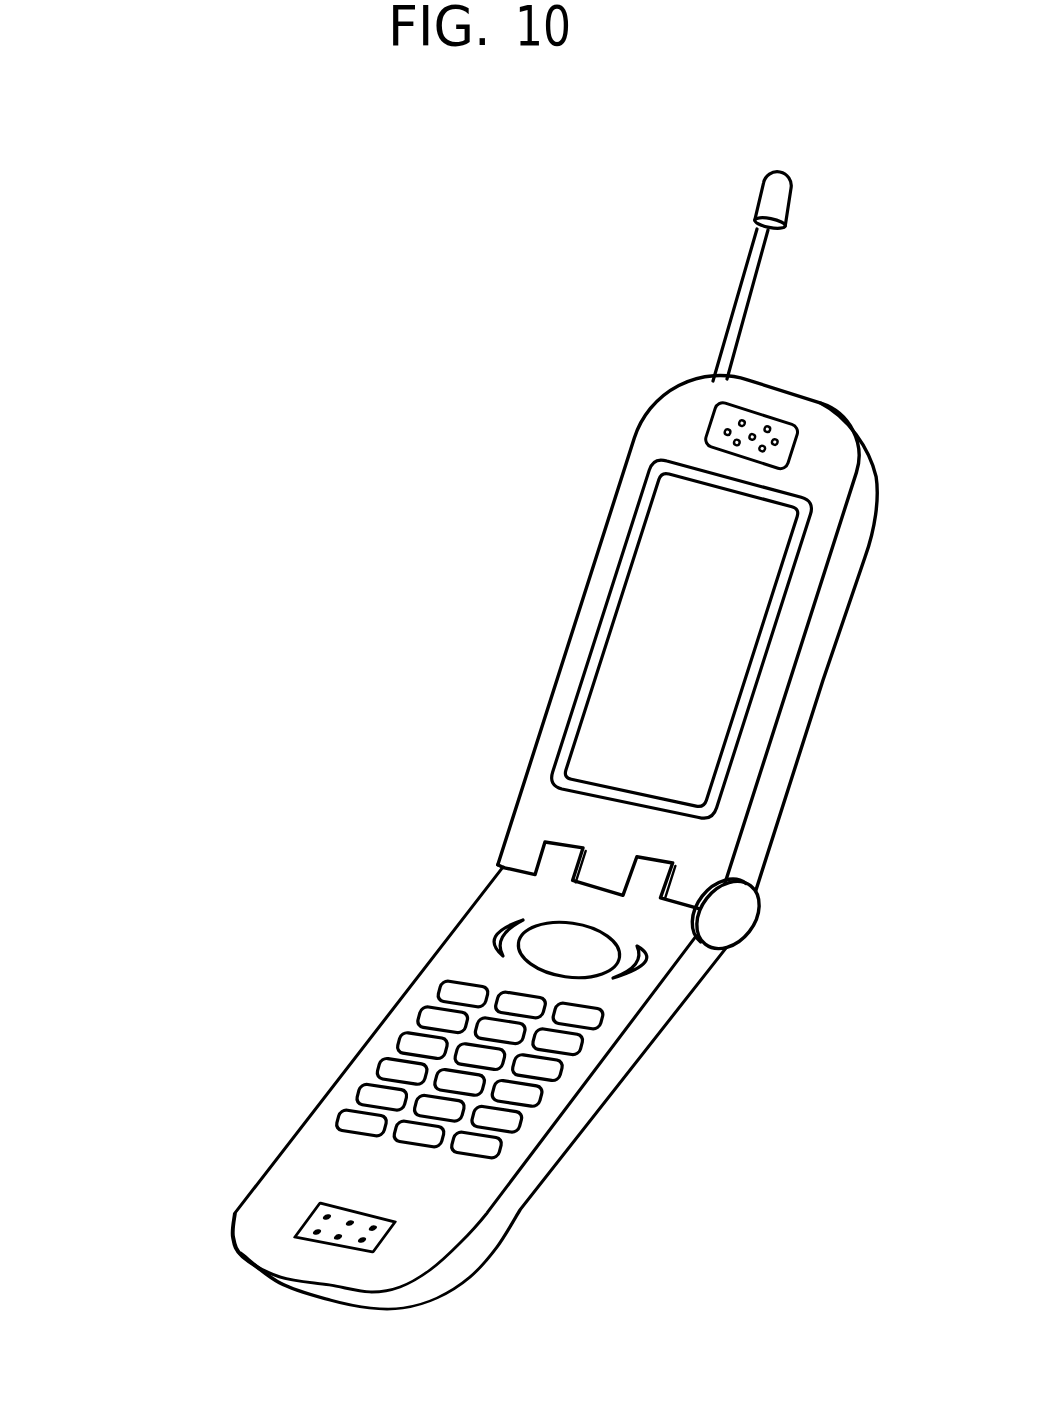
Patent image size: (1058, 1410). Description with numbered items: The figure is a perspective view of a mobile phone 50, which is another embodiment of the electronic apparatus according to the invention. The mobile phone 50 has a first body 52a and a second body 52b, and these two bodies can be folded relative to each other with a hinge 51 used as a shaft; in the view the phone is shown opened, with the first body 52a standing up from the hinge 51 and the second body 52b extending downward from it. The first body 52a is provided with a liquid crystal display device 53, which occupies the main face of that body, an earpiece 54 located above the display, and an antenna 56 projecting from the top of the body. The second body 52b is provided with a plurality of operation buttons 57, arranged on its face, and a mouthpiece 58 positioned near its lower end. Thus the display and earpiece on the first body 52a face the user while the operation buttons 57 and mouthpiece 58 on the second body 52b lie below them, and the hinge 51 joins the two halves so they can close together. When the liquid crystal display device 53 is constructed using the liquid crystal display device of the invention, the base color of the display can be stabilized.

The mobile phone 50 is at (483, 321).
The hinge 51 is at (742, 917).
The first body 52a is at (542, 608).
The second body 52b is at (336, 1013).
The liquid crystal display device 53 is at (682, 643).
The earpiece 54 is at (752, 436).
The antenna 56 is at (767, 193).
The operation buttons 57 is at (502, 1113).
The mouthpiece 58 is at (335, 1242).